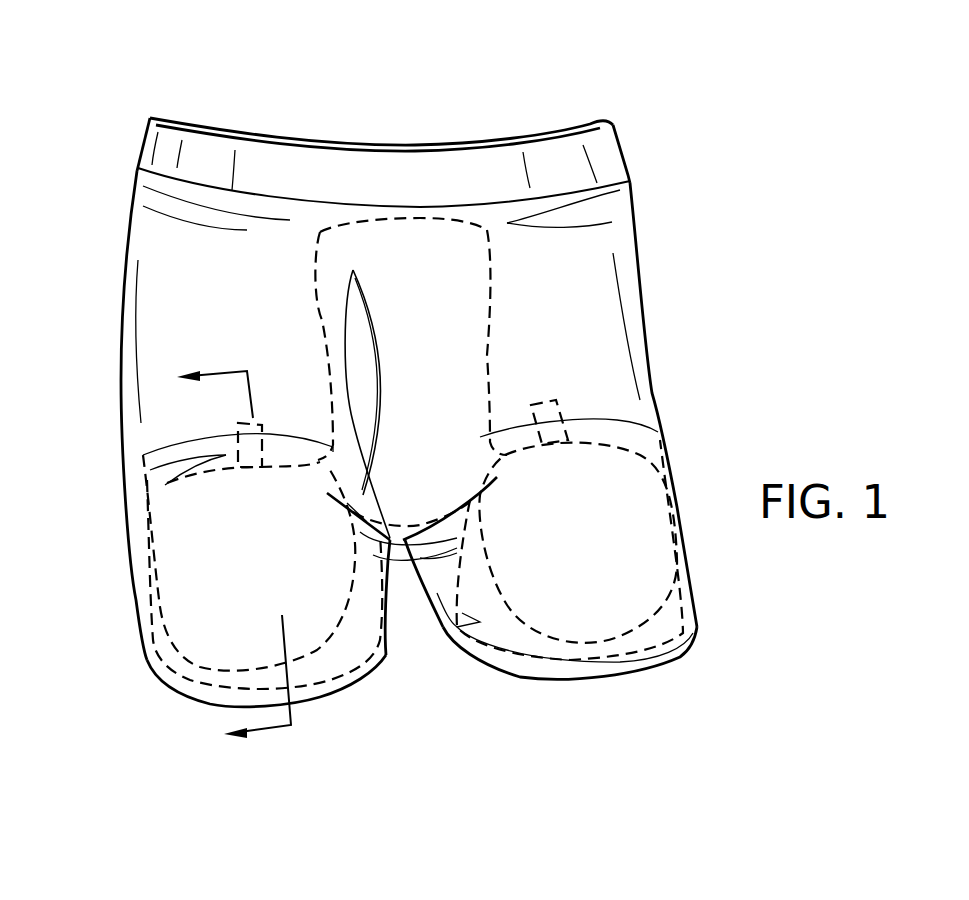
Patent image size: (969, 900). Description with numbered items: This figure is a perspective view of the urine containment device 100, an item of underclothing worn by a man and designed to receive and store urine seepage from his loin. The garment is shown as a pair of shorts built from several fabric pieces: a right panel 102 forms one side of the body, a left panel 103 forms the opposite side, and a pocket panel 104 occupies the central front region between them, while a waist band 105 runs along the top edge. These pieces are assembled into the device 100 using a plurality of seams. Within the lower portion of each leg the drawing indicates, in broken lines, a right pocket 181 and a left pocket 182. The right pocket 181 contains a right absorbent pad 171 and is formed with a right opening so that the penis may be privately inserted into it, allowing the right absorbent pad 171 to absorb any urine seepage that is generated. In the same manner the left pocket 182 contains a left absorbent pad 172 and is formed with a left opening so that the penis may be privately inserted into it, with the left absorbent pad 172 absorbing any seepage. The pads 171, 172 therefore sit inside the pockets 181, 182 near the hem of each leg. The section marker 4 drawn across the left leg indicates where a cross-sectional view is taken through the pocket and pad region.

The urine containment device 100 is at (172, 80).
The right panel 102 is at (166, 280).
The left panel 103 is at (613, 248).
The pocket panel 104 is at (400, 258).
The waist band 105 is at (608, 155).
The right absorbent pad 171 is at (315, 613).
The left absorbent pad 172 is at (590, 618).
The right pocket 181 is at (165, 493).
The left pocket 182 is at (640, 448).
The section line 4- 4 is at (231, 562).